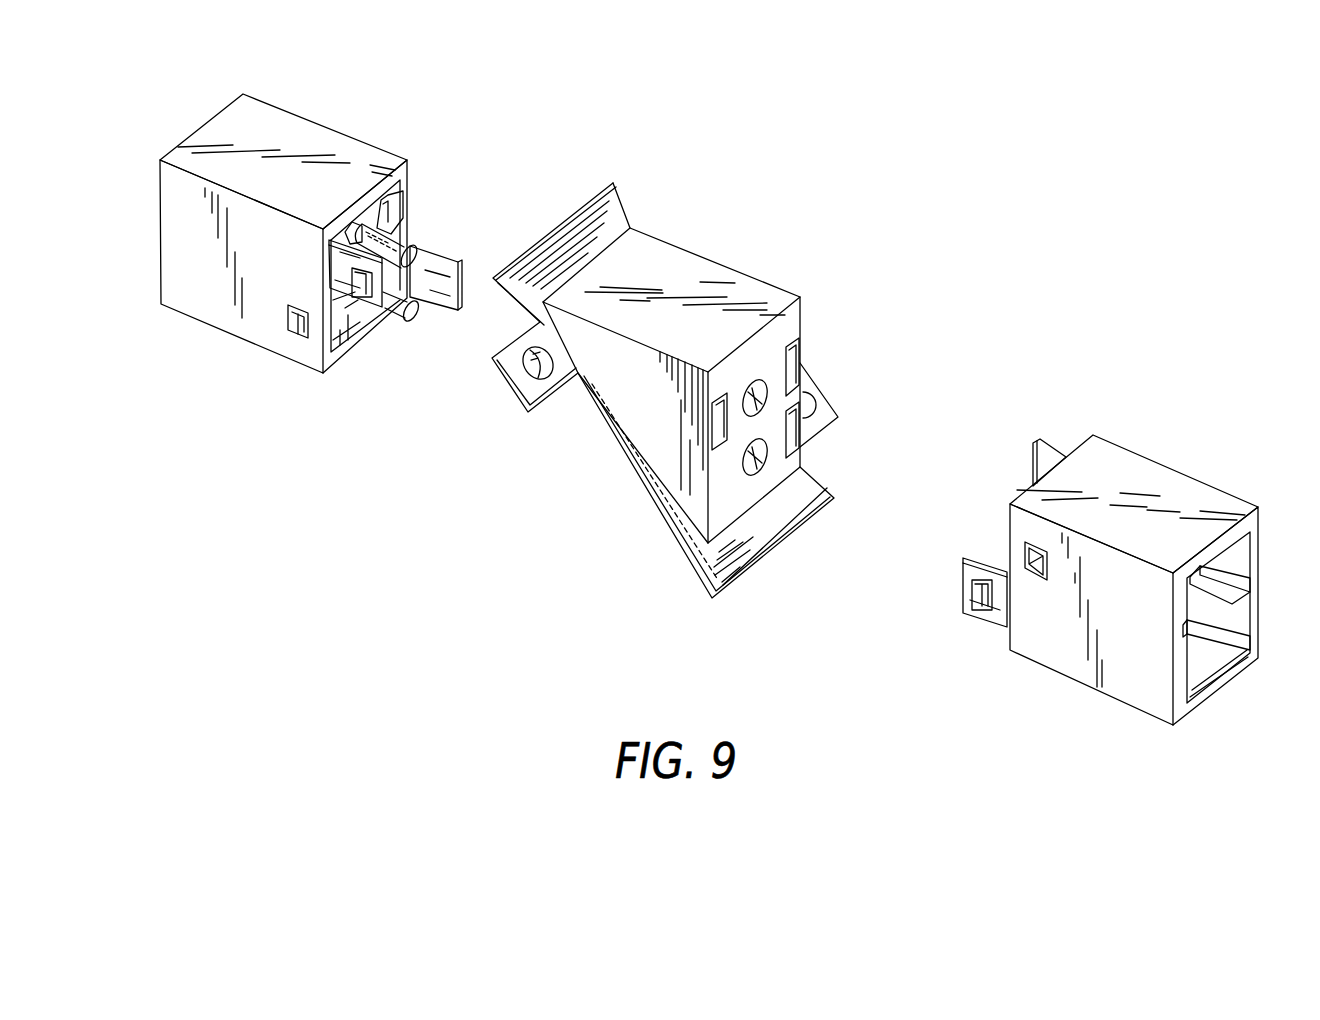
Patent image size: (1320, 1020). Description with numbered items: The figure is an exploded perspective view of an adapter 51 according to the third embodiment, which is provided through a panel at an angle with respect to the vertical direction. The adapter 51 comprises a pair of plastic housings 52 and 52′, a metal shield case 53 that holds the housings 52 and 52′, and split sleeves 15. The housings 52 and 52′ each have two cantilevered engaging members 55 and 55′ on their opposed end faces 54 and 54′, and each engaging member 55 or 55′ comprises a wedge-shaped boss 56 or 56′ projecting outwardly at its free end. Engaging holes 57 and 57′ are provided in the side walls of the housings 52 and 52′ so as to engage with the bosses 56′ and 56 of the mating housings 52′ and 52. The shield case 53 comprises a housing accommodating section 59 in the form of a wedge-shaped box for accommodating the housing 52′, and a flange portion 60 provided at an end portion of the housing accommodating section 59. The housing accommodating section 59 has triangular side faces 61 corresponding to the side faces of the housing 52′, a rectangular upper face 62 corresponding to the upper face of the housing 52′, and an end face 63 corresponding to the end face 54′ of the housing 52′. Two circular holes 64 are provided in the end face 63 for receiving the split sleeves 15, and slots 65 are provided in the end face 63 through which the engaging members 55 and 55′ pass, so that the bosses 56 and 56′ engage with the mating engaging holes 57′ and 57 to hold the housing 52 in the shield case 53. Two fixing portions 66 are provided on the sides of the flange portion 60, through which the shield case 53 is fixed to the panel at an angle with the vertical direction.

The housing 52′ is at (325, 116).
The end face 54′ is at (406, 178).
The split sleeve 15 is at (385, 235).
The engaging member 55′ is at (443, 262).
The wedge-shaped boss 56′ is at (363, 290).
The engaging hole 57′ is at (300, 332).
The shield case 53 is at (688, 375).
The housing accommodating section 59 is at (698, 379).
The flange portion 60 is at (616, 214).
The side face 61 is at (633, 387).
The upper face 62 is at (700, 282).
The end face 63 is at (755, 488).
The circular hole 64 is at (766, 458).
The slot 65 is at (806, 420).
The fixing portion 66 is at (524, 398).
The adapter 51 is at (502, 542).
The housing 52 is at (1210, 468).
The end face 54 is at (1067, 437).
The engaging member 55 is at (1032, 472).
The wedge-shaped boss 56 is at (972, 597).
The engaging hole 57 is at (1038, 580).